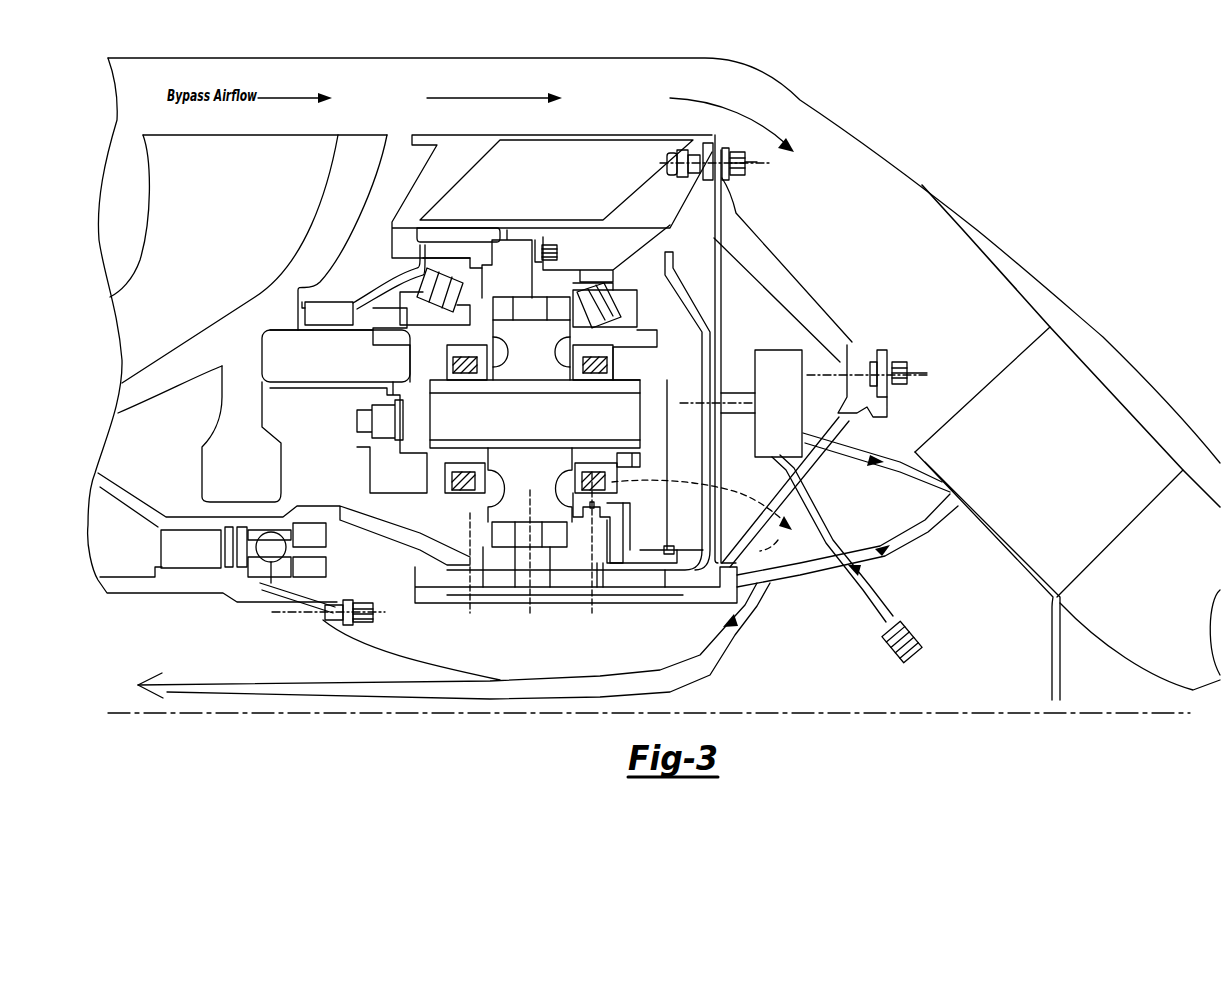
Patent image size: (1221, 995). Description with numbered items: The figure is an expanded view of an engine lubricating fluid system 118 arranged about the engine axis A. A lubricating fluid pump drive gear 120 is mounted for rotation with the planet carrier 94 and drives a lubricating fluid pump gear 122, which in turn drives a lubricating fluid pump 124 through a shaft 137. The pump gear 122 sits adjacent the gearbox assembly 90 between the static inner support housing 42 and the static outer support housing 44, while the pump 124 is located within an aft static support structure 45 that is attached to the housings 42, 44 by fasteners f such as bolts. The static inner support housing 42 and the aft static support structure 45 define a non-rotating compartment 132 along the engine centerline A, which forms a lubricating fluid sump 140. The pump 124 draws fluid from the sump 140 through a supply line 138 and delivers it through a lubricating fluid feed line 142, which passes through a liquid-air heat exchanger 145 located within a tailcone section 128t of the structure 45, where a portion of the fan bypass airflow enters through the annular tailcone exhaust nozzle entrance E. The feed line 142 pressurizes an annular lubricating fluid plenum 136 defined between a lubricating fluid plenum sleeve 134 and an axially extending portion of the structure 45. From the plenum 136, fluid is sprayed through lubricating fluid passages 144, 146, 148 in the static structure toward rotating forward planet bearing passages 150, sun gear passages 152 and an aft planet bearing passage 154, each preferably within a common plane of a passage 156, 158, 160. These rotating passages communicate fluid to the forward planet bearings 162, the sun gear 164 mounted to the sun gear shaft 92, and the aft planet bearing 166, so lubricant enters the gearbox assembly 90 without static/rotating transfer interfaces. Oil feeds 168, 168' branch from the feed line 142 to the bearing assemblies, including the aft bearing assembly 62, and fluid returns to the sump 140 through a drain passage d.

The annular tailcone exhaust nozzle entrance E is at (750, 100).
The fasteners f is at (757, 163).
The static outer support housing 44 is at (585, 152).
The gearbox assembly 90 is at (380, 268).
The lubricating fluid pump gear 122 is at (693, 300).
The aft static support structure 45 is at (810, 272).
The tailcone section 128t is at (1107, 340).
The shaft 137 is at (733, 390).
The lubricating fluid pump 124 is at (758, 457).
The aft bearing assembly 62 is at (256, 515).
The forward planet bearings 162 is at (465, 470).
The sun gear 164 is at (507, 517).
The aft planet bearing 166 is at (597, 470).
The passage 158 is at (522, 518).
The aft planet bearing passage 154 is at (612, 490).
The passage 156 is at (472, 545).
The planet carrier 94 is at (626, 500).
The lubricating fluid feed line 142 is at (880, 470).
The forward planet bearing passages 150 is at (450, 553).
The sun gear shaft 92 is at (452, 595).
The sun gear passages 152 is at (523, 557).
The passage 160 is at (590, 545).
The lubricating fluid pump drive gear 120 is at (608, 565).
The annular lubricating fluid plenum 136 is at (665, 580).
The lubricating fluid plenum sleeve 134 is at (696, 597).
The lubricating fluid sump 140 is at (836, 629).
The supply line 138 is at (877, 611).
The lubricating fluid passage 144 is at (483, 583).
The lubricating fluid passage 146 is at (550, 587).
The lubricating fluid passage 148 is at (603, 580).
The static inner support housing 42 is at (130, 578).
The non-rotating compartment 132 is at (182, 651).
The oil feed 168 is at (444, 667).
The oil feed 168' is at (566, 710).
The engine lubricating fluid system 118 is at (396, 719).
The engine axis A is at (1005, 710).
The drain passage d is at (702, 519).
The liquid-air heat exchanger 145 is at (1058, 510).